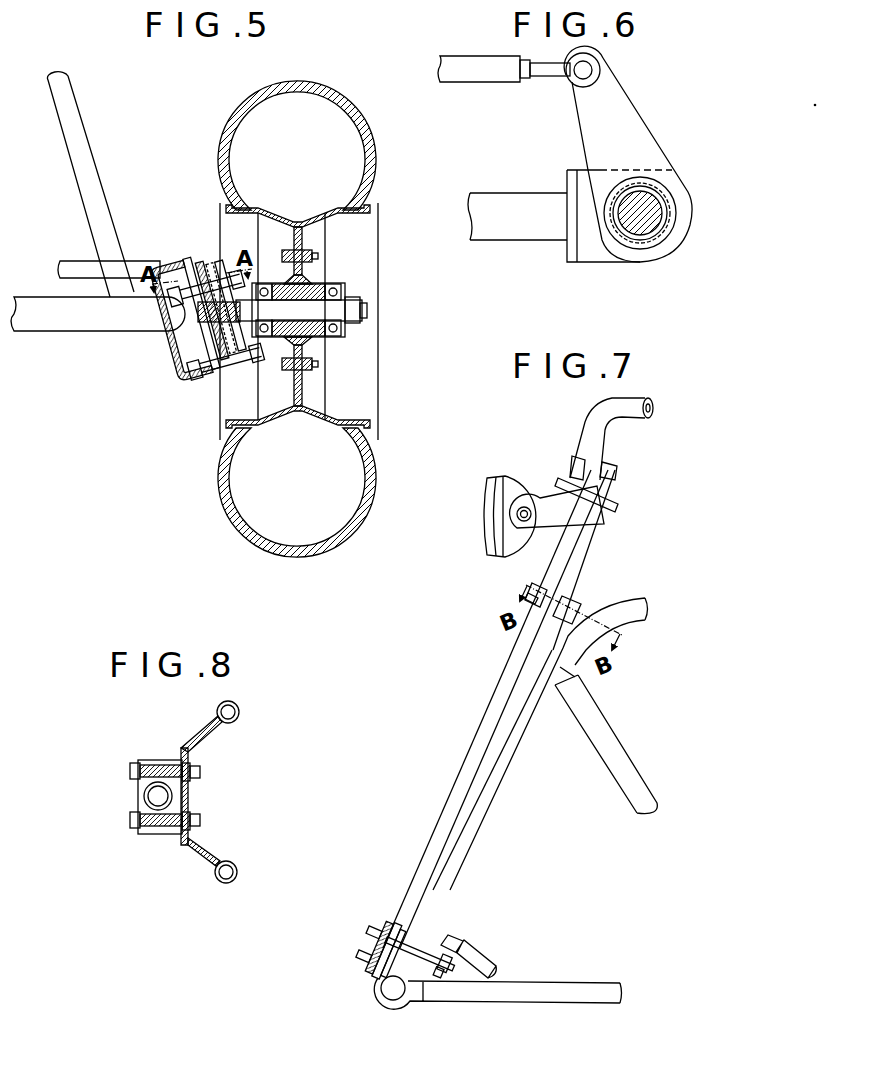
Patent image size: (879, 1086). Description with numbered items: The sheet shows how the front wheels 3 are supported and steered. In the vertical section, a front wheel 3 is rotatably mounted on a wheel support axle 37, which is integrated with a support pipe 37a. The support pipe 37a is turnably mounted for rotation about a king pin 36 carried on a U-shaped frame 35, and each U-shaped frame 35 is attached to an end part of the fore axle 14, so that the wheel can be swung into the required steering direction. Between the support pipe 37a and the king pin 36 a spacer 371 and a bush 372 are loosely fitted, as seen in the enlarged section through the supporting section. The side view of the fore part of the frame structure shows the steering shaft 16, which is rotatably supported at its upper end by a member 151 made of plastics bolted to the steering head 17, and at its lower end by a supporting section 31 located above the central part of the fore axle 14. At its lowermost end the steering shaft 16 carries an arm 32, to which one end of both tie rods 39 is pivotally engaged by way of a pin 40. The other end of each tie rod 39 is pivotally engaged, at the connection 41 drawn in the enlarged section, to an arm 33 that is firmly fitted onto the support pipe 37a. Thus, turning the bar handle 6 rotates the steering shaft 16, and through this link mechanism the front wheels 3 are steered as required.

In FIG. 5, the front wheel 3 is at (356, 108).
In FIG. 7, the bar handle 6 is at (612, 444).
In FIG. 5, the fore axle 14 is at (80, 333).
In FIG. 6, the fore axle 14 is at (490, 194).
In FIG. 7, the fore axle 14 is at (380, 1001).
In FIG. 7, the steering shaft 16 is at (474, 736).
In FIG. 8, the steering shaft 16 is at (146, 797).
In FIG. 7, the steering head 17 is at (580, 604).
In FIG. 8, the steering head 17 is at (182, 842).
In FIG. 7, the supporting section 31 is at (372, 946).
In FIG. 7, the arm 32 is at (436, 942).
In FIG. 6, the arm 33 is at (640, 124).
In FIG. 5, the U-shaped frame 35 is at (188, 330).
In FIG. 6, the U-shaped frame 35 is at (572, 250).
In FIG. 5, the king pin 36 is at (204, 258).
In FIG. 6, the king pin 36 is at (662, 235).
In FIG. 5, the wheel support axle 37 is at (252, 322).
In FIG. 5, the support pipe 37a is at (200, 318).
In FIG. 6, the support pipe 37a is at (672, 213).
In FIG. 6, the tie rod 39 is at (474, 82).
In FIG. 7, the tie rod 39 is at (482, 952).
In FIG. 7, the pin 40 is at (442, 978).
In FIG. 6, the pin 41 is at (575, 80).
In FIG. 8, the member made of plastics 151 is at (156, 760).
In FIG. 5, the spacer 371 is at (215, 348).
In FIG. 6, the spacer 371 is at (670, 196).
In FIG. 5, the bush 372 is at (222, 352).
In FIG. 6, the bush 372 is at (660, 180).